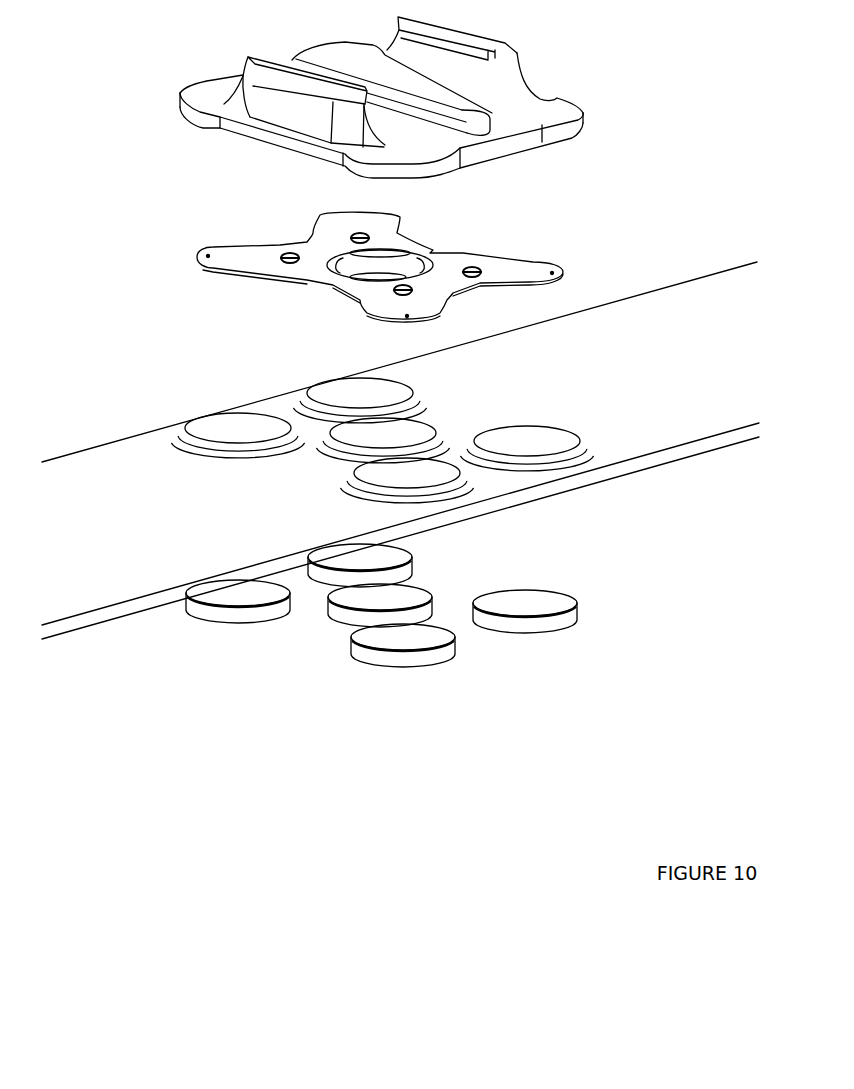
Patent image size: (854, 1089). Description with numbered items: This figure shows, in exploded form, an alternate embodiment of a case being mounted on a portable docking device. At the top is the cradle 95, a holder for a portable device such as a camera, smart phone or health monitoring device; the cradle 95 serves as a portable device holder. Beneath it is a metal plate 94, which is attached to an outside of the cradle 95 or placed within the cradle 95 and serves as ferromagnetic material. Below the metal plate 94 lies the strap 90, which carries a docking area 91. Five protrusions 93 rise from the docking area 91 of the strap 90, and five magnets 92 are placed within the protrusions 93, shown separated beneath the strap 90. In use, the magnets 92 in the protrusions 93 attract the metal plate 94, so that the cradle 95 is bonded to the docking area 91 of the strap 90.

The strap 90 is at (672, 465).
The docking area 91 is at (148, 462).
The magnets 92 is at (413, 553).
The protrusions 93 is at (417, 392).
The metal plate 94 is at (567, 273).
The cradle 95 is at (583, 117).